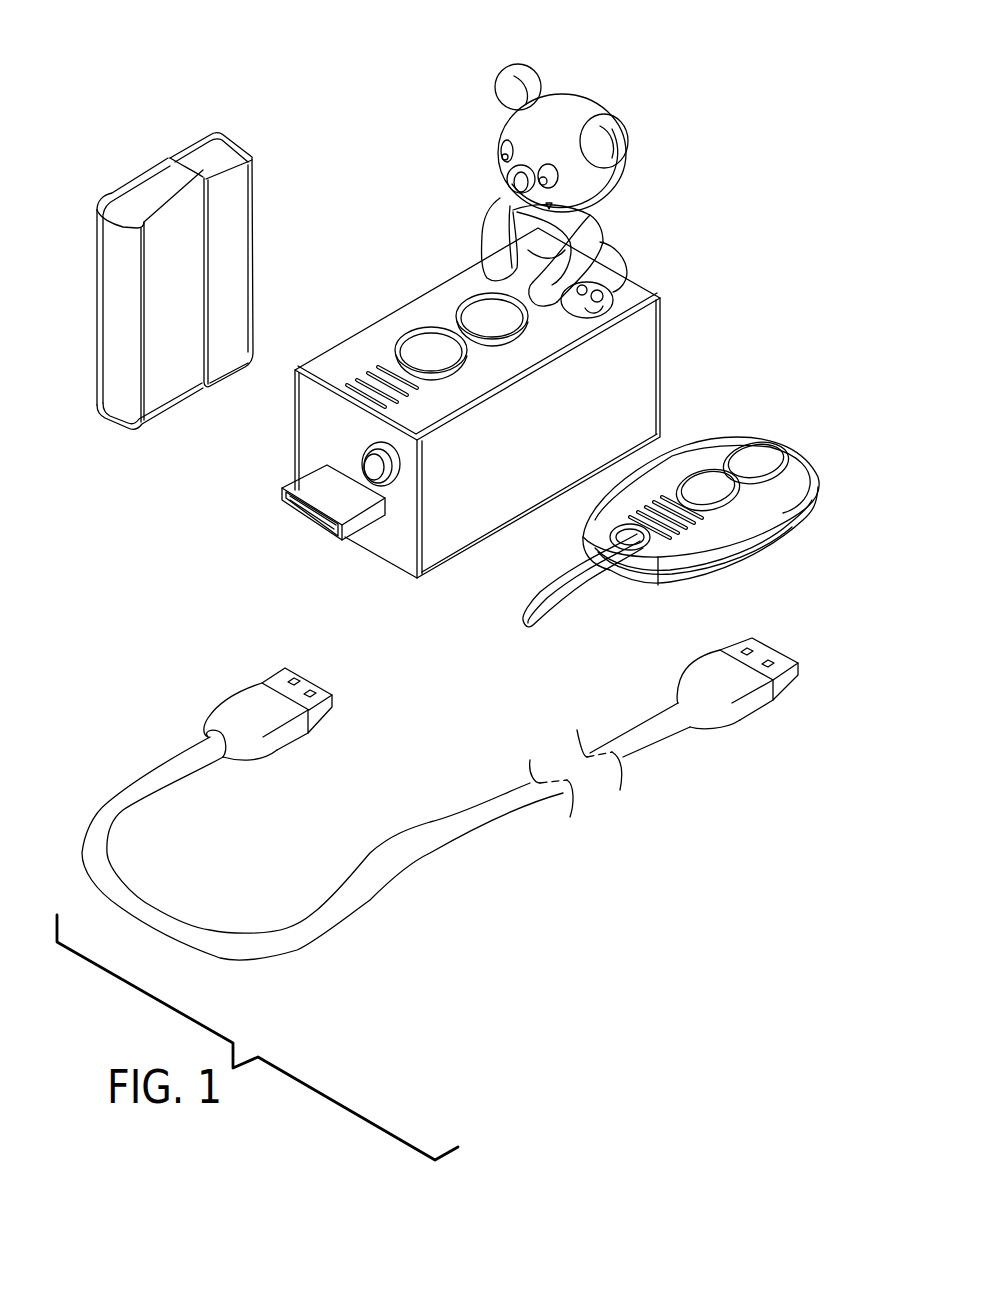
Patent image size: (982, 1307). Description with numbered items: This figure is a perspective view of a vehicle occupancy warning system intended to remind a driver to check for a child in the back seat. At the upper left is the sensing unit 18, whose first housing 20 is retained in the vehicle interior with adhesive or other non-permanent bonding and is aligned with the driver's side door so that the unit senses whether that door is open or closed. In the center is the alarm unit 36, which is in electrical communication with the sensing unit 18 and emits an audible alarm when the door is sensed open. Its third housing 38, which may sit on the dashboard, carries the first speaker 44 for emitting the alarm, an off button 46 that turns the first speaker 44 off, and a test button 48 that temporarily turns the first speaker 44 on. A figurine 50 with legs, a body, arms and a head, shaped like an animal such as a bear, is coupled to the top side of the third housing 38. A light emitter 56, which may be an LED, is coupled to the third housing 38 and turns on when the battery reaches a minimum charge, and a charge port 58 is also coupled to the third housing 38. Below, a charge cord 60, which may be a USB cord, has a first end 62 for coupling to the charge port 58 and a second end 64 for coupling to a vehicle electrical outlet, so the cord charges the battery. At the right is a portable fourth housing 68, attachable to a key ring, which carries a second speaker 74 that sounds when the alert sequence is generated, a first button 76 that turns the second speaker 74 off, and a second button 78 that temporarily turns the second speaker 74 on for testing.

The sensing unit 18 is at (162, 98).
The first housing 20 is at (122, 181).
The alarm unit 36 is at (712, 300).
The third housing 38 is at (653, 297).
The first speaker 44 is at (370, 375).
The off button 46 is at (478, 318).
The test button 48 is at (417, 355).
The figurine 50 is at (568, 98).
The light emitter 56 is at (367, 465).
The charge port 58 is at (290, 506).
The charge cord 60 is at (413, 830).
The first end 62 is at (285, 668).
The second end 64 is at (785, 680).
The fourth housing 68 is at (807, 457).
The second speaker 74 is at (662, 497).
The first button 76 is at (750, 455).
The second button 78 is at (710, 483).